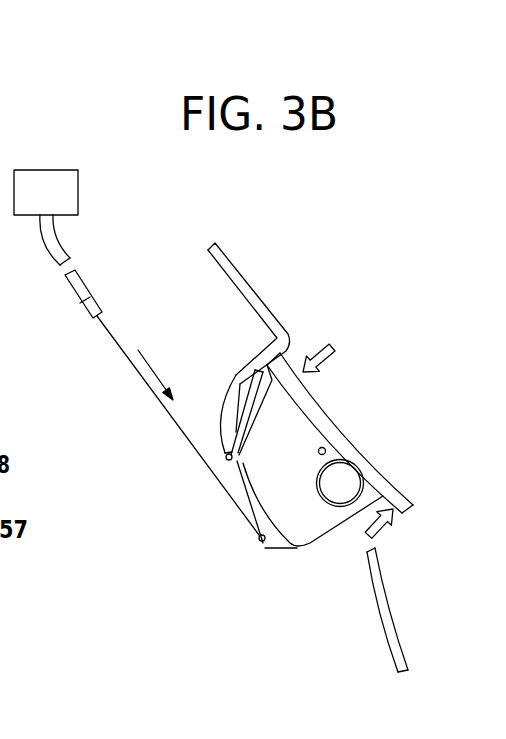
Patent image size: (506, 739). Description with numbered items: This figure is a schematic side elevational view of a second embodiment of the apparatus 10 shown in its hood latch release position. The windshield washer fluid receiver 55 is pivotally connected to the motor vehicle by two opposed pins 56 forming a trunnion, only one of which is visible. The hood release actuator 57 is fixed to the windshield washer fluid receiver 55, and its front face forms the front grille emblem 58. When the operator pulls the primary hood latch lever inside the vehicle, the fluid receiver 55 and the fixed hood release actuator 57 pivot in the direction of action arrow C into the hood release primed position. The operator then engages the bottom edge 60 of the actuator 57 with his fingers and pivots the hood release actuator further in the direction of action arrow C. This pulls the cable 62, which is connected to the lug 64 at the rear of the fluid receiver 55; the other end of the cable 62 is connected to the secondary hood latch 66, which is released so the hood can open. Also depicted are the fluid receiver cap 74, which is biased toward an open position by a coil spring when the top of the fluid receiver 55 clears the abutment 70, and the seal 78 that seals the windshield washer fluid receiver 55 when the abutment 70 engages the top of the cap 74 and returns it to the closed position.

The apparatus 10 is at (312, 296).
The windshield washer fluid receiver 55 is at (297, 511).
The pins 56 is at (326, 448).
The hood release actuator 57 is at (386, 481).
The front grille emblem 58 is at (373, 447).
The bottom edge 60 is at (410, 521).
The cable 62 is at (208, 473).
The lug 64 is at (262, 546).
The secondary hood latch 66 is at (78, 192).
The abutment 70 is at (292, 347).
The fluid receiver cap 74 is at (221, 415).
The seal 78 is at (252, 424).
The action arrow C is at (386, 533).